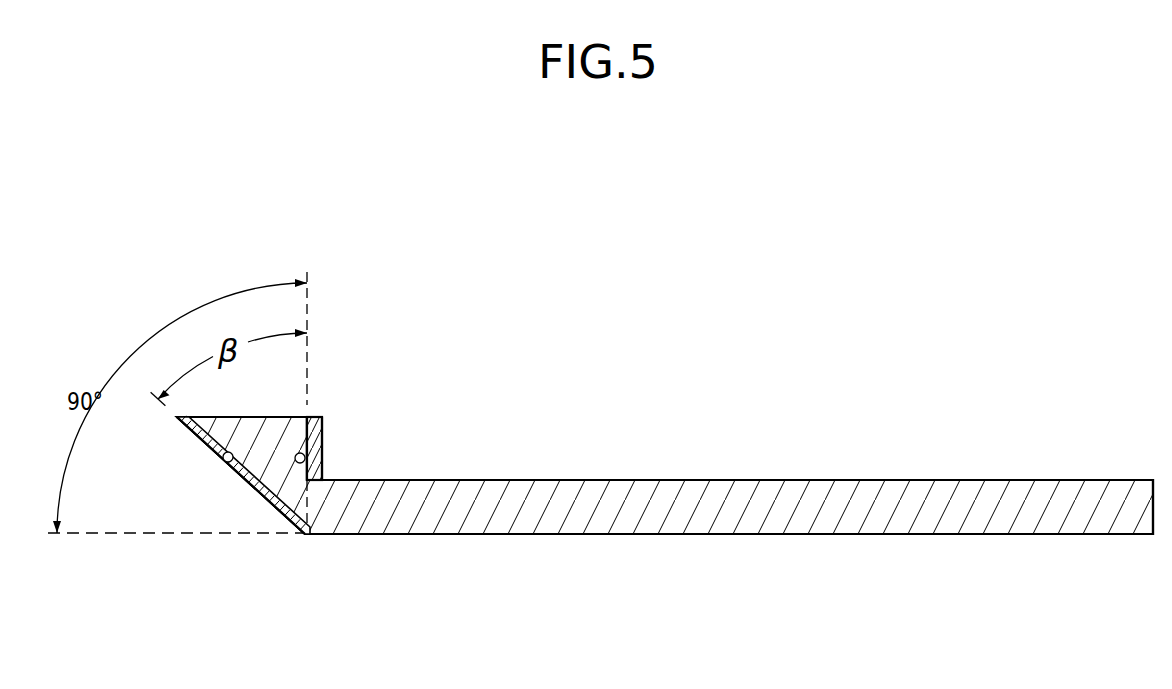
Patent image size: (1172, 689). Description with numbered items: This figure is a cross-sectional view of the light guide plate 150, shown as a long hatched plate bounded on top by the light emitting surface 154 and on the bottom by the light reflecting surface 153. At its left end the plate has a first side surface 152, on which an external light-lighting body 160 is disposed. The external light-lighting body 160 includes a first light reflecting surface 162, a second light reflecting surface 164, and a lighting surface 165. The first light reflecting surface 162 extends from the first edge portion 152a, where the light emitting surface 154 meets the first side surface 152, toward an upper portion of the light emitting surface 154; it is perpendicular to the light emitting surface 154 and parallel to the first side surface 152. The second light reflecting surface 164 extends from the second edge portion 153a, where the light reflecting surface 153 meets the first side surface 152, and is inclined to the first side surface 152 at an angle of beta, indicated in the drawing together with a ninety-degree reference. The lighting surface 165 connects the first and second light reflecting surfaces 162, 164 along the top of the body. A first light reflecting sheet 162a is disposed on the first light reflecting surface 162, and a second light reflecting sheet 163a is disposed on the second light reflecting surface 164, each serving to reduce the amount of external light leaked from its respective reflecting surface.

The light guide plate 150 is at (826, 472).
The first side surface 152 is at (308, 510).
The first edge portion 152a is at (366, 535).
The light reflecting surface 153 is at (702, 537).
The second edge portion 153a is at (303, 537).
The light emitting surface 154 is at (650, 479).
The external light-lighting body 160 is at (360, 352).
The first light reflecting surface 162 is at (322, 443).
The first light reflecting sheet 162a is at (322, 418).
The second light reflecting sheet 163a is at (257, 497).
The second light reflecting surface 164 is at (213, 457).
The lighting surface 165 is at (232, 417).